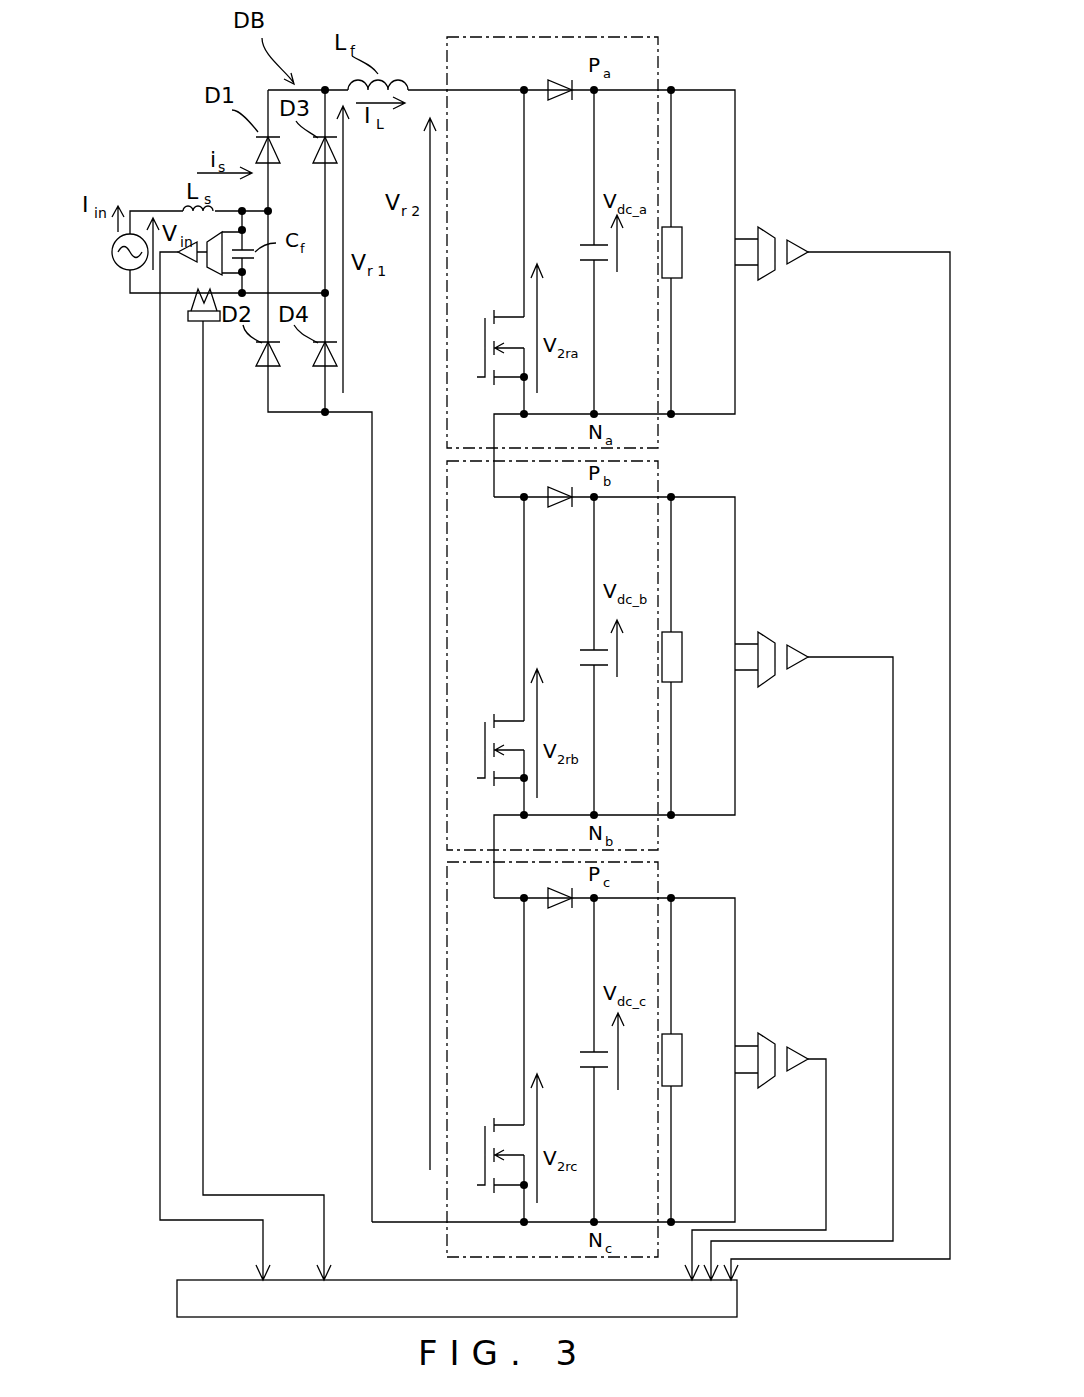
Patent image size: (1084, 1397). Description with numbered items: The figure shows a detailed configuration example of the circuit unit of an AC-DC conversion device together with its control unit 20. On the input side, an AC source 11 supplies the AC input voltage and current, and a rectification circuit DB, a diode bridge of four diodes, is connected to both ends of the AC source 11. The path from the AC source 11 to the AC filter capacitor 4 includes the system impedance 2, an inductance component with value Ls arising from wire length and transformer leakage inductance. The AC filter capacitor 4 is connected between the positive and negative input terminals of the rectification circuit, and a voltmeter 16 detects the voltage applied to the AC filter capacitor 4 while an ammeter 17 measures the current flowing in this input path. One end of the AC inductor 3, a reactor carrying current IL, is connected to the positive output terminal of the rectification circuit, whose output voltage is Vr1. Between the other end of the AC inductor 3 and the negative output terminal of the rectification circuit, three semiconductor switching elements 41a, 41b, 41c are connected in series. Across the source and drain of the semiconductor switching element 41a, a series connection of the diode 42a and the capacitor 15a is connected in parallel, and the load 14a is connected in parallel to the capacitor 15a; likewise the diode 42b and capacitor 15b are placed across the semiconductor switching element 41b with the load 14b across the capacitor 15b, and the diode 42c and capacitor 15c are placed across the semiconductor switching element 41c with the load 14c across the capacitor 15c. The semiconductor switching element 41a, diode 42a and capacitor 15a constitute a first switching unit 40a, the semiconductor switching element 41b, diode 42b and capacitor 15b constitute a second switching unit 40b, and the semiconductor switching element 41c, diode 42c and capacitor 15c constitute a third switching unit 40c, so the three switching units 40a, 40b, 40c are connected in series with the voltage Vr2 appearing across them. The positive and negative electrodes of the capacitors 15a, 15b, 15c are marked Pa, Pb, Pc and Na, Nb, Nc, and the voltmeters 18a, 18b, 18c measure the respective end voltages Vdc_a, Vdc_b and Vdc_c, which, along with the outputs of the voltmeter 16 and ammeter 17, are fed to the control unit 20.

The system impedance 2 is at (205, 238).
The AC inductor 3 is at (400, 80).
The AC filter capacitor 4 is at (247, 260).
The AC source 11 is at (96, 245).
The voltmeter 16 is at (183, 208).
The ammeter 17 is at (199, 326).
The control unit 20 is at (737, 1293).
The first switching unit 40a is at (658, 58).
The second switching unit 40b is at (658, 480).
The third switching unit 40c is at (658, 880).
The semiconductor switching element 41a is at (473, 340).
The semiconductor switching element 41b is at (473, 750).
The semiconductor switching element 41c is at (473, 1150).
The diode 42a is at (553, 100).
The diode 42b is at (553, 507).
The diode 42c is at (553, 908).
The load 14a is at (686, 244).
The load 14b is at (686, 650).
The load 14c is at (686, 1052).
The capacitor 15a is at (583, 245).
The capacitor 15b is at (583, 650).
The capacitor 15c is at (583, 1052).
The voltmeter 18a is at (765, 228).
The voltmeter 18b is at (765, 623).
The voltmeter 18c is at (765, 1043).